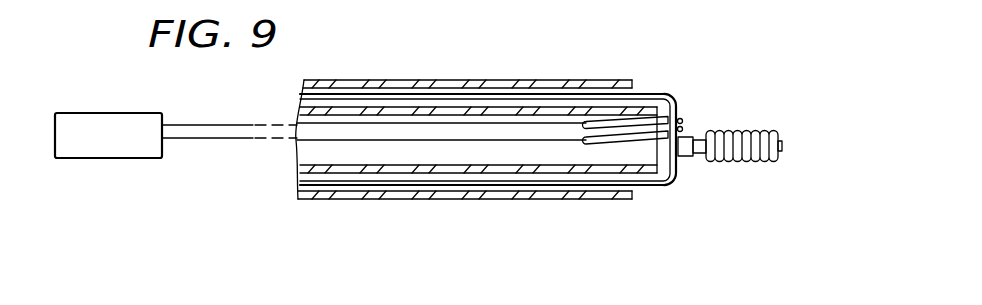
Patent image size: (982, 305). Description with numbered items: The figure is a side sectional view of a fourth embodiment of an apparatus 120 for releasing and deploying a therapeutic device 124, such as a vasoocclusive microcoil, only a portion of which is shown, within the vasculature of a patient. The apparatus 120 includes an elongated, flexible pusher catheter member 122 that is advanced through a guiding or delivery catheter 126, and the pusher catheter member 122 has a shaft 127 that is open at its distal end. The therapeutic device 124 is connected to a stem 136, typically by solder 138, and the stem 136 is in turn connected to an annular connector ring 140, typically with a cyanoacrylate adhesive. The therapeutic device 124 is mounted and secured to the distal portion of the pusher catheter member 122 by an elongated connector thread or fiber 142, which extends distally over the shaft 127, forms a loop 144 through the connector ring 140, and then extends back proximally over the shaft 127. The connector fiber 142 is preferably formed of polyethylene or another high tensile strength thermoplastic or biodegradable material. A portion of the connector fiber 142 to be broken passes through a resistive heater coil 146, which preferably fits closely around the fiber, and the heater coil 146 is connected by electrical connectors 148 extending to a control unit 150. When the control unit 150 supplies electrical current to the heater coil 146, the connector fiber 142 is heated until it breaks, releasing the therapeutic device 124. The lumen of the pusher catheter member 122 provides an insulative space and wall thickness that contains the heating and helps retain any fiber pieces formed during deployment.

The apparatus 120 is at (663, 80).
The pusher catheter member 122 is at (297, 170).
The therapeutic device 124 is at (770, 163).
The guiding or delivery catheter 126 is at (430, 83).
The shaft 127 is at (668, 183).
The stem 136 is at (697, 158).
The solder 138 is at (756, 164).
The annular connector ring 140 is at (756, 164).
The connector thread or fiber 142 is at (527, 190).
The loop 144 is at (678, 100).
The resistive heater coil 146 is at (626, 125).
The electrical connectors 148 is at (537, 126).
The control unit 150 is at (108, 158).